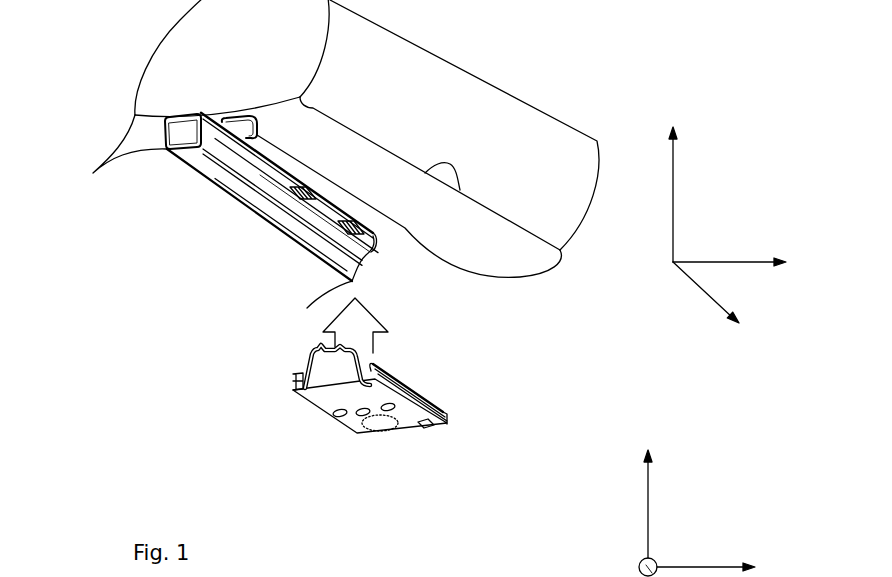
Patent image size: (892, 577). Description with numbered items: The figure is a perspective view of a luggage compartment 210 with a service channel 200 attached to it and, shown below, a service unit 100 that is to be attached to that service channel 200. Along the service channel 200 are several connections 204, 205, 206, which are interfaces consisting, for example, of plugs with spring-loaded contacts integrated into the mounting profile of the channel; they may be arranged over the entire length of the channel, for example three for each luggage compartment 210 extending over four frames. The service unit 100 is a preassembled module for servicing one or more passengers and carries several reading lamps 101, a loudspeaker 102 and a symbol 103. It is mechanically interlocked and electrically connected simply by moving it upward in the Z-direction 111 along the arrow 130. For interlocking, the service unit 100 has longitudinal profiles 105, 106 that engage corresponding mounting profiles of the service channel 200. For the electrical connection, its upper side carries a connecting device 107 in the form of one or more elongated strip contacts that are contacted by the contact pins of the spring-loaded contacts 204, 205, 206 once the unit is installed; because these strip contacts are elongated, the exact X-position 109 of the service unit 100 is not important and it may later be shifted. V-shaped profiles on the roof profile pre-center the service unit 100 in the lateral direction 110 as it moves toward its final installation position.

The service unit 100 is at (188, 399).
The reading lamps 101 is at (338, 417).
The loudspeaker 102 is at (388, 432).
The symbol 103 is at (443, 426).
The longitudinal profile 105 is at (295, 374).
The longitudinal profile 106 is at (390, 370).
The connecting device 107 is at (333, 347).
The X-position 109 is at (700, 292).
The lateral direction 110 is at (738, 262).
The Z-direction 111 is at (673, 183).
The arrow 130 is at (373, 345).
The service channel 200 is at (128, 118).
The connection 204 is at (318, 120).
The connection 205 is at (295, 186).
The connection 206 is at (363, 227).
The luggage compartment 210 is at (512, 101).